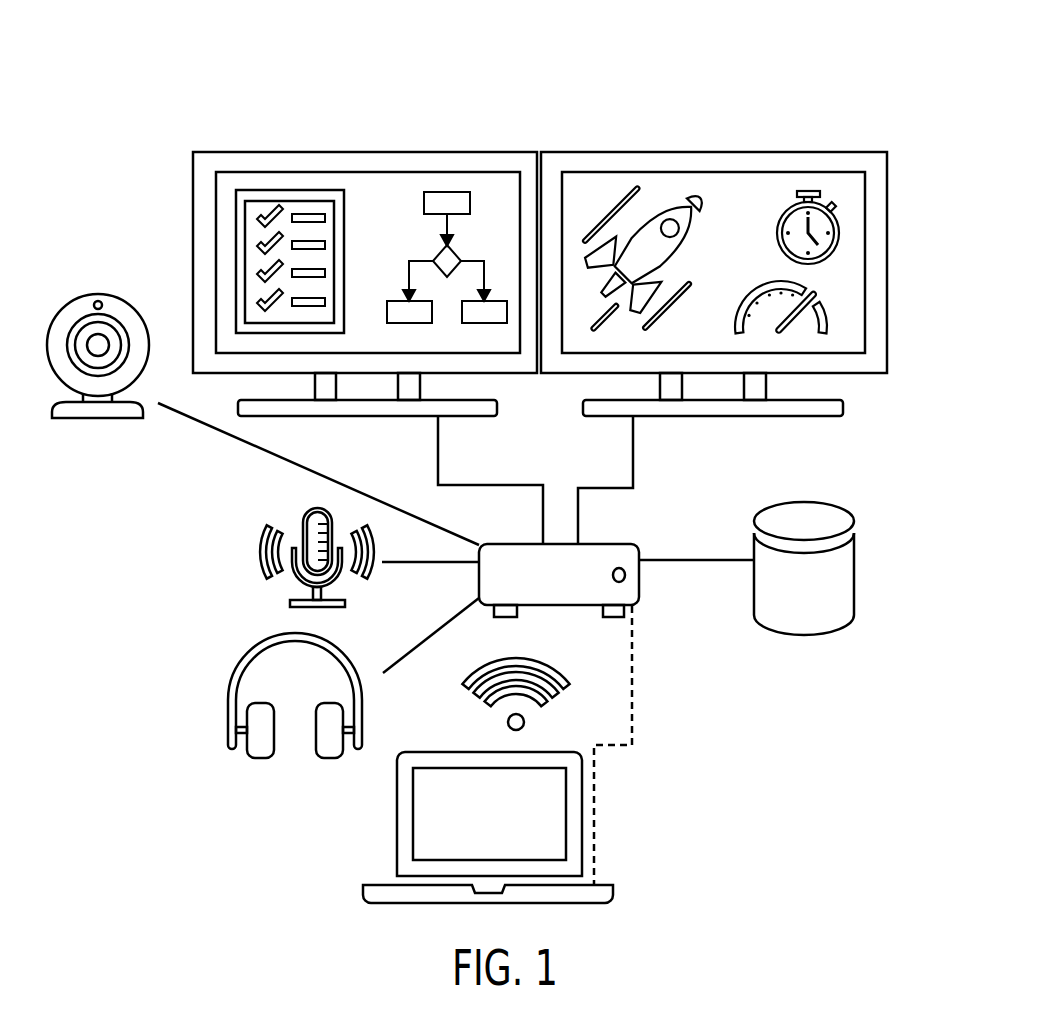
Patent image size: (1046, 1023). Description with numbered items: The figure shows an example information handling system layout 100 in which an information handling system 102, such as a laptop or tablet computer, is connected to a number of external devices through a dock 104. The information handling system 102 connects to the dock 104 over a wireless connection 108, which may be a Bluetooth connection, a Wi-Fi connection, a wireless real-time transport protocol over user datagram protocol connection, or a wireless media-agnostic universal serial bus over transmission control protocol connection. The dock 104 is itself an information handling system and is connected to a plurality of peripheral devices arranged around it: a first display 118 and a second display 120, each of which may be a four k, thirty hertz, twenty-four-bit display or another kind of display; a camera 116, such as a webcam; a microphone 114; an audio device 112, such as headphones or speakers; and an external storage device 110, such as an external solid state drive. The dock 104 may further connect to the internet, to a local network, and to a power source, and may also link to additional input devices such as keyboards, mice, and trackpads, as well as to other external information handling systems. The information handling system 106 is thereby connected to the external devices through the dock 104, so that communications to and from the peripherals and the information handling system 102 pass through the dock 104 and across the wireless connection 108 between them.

The information handling system layout 100 is at (820, 84).
The information handling system 102 is at (397, 838).
The dock 104 is at (640, 548).
The information handling system 106 is at (634, 745).
The wireless connection 108 is at (555, 663).
The external storage device 110 is at (855, 580).
The audio device 112 is at (228, 710).
The microphone 114 is at (260, 558).
The camera 116 is at (93, 293).
The first display 118 is at (887, 258).
The second display 120 is at (366, 165).